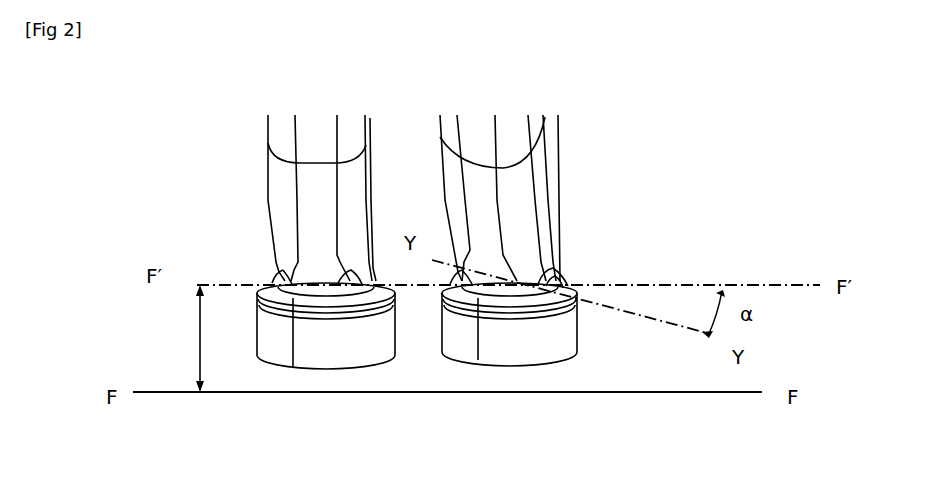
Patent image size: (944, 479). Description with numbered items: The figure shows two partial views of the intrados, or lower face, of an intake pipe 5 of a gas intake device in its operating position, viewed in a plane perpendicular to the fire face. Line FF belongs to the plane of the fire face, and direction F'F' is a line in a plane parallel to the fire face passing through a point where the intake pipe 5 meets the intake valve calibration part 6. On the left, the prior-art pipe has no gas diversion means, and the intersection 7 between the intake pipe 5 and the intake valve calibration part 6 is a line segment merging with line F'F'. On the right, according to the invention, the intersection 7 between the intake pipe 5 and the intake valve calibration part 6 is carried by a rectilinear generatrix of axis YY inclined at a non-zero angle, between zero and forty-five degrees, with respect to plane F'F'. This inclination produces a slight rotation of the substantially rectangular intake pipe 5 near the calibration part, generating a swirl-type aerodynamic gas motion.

The intake pipe 5 is at (288, 254).
The intake valve calibration part 6 is at (278, 345).
The intersection 7 is at (567, 280).